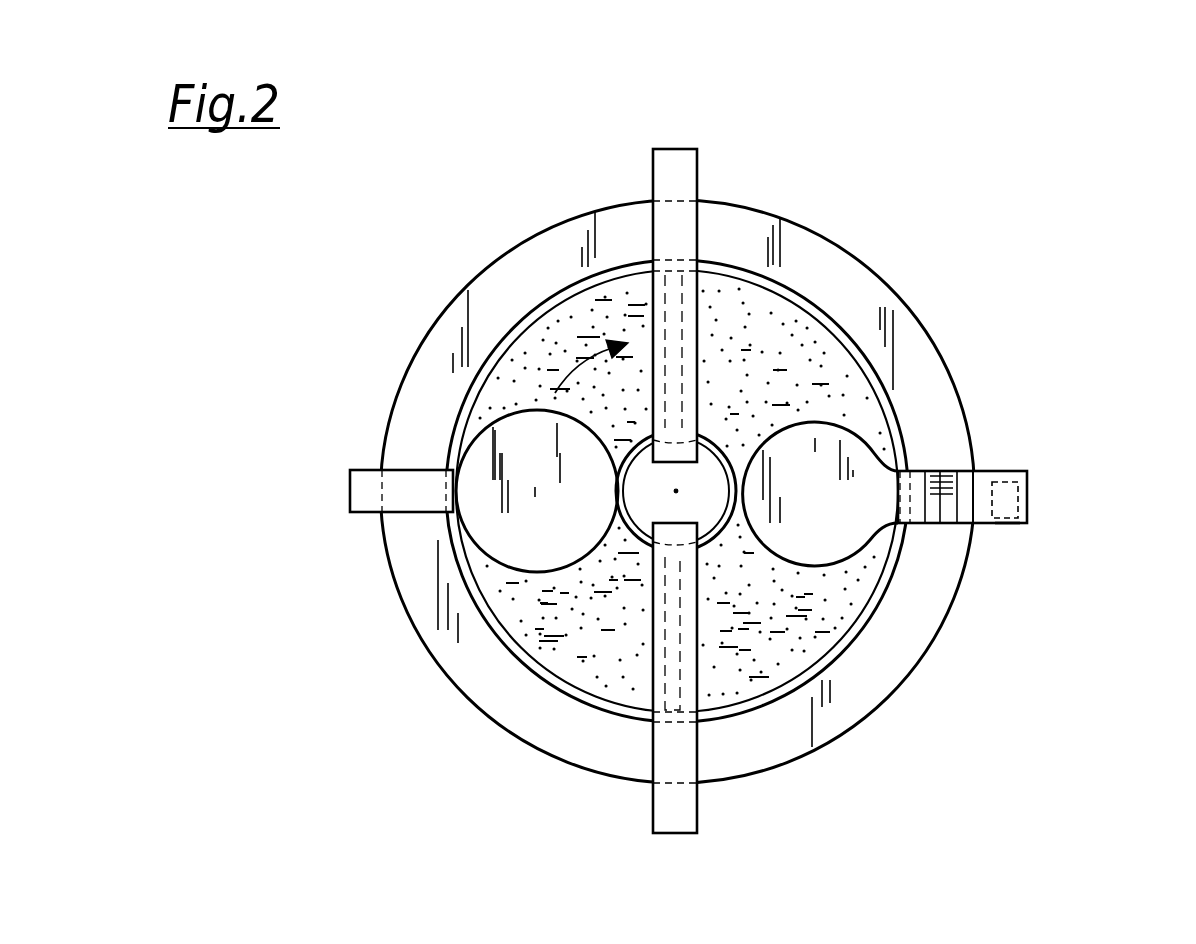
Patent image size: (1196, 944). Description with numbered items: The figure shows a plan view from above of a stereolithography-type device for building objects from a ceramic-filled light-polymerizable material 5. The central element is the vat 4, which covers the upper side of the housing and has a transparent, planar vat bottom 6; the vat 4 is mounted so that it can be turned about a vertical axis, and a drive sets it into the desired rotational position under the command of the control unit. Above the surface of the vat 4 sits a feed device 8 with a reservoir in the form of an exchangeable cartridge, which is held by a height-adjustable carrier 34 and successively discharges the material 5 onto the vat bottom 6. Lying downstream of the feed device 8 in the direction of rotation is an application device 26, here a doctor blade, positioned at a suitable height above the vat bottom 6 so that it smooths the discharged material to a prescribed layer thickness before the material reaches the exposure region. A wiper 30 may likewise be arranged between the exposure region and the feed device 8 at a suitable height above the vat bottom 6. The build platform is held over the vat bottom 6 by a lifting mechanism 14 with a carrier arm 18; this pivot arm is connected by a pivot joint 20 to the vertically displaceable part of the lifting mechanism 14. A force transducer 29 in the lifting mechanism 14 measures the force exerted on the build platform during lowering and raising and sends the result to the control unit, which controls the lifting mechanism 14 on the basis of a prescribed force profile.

The vat 4 is at (835, 288).
The ceramic-filled light-polymerizable material 5 is at (800, 360).
The vat bottom 6 is at (833, 390).
The feed device 8 is at (522, 408).
The lifting mechanism 14 is at (1001, 526).
The carrier arm 18 is at (858, 495).
The pivot joint 20 is at (943, 500).
The application device 26 is at (706, 348).
The force transducer 29 is at (1030, 490).
The wiper 30 is at (672, 668).
The height-adjustable carrier 34 is at (413, 483).